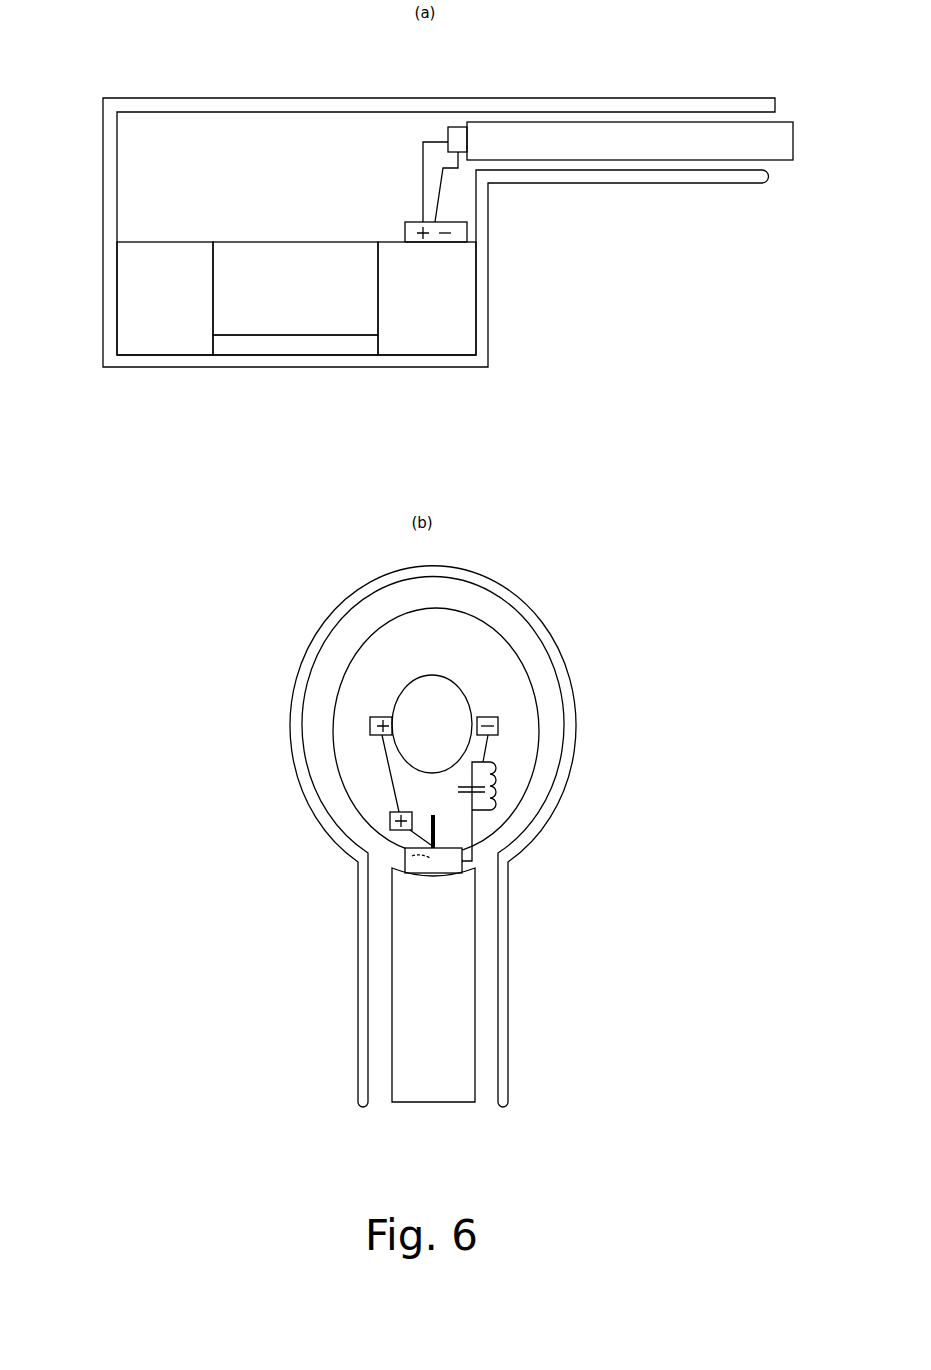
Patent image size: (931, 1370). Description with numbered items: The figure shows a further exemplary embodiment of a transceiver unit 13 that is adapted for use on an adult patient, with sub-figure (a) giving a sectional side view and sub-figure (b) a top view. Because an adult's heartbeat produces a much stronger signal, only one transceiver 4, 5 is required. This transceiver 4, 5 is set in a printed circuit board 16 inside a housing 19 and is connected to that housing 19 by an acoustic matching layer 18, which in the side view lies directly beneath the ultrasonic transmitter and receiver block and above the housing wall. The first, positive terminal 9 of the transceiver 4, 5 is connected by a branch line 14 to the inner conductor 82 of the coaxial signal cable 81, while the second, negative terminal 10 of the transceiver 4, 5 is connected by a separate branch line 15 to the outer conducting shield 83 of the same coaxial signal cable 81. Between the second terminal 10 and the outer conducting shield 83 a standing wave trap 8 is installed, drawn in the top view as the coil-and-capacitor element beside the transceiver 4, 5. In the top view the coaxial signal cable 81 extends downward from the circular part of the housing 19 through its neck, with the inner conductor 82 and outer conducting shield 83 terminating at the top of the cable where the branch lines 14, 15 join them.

The transceiver 4 is at (403, 507).
The transceiver 5 is at (305, 316).
The standing wave trap 8 is at (500, 783).
The first terminal 9 is at (466, 227).
The second terminal 10 is at (500, 722).
The transceiver unit 13 is at (88, 427).
The branch line 14 is at (421, 200).
The branch line 15 is at (445, 171).
The printed circuit board 16 is at (148, 315).
The acoustic matching layer 18 is at (250, 350).
The housing 19 is at (108, 108).
The coaxial signal cable 81 is at (668, 142).
The inner conductor 82 is at (435, 140).
The outer conducting shield 83 is at (455, 137).